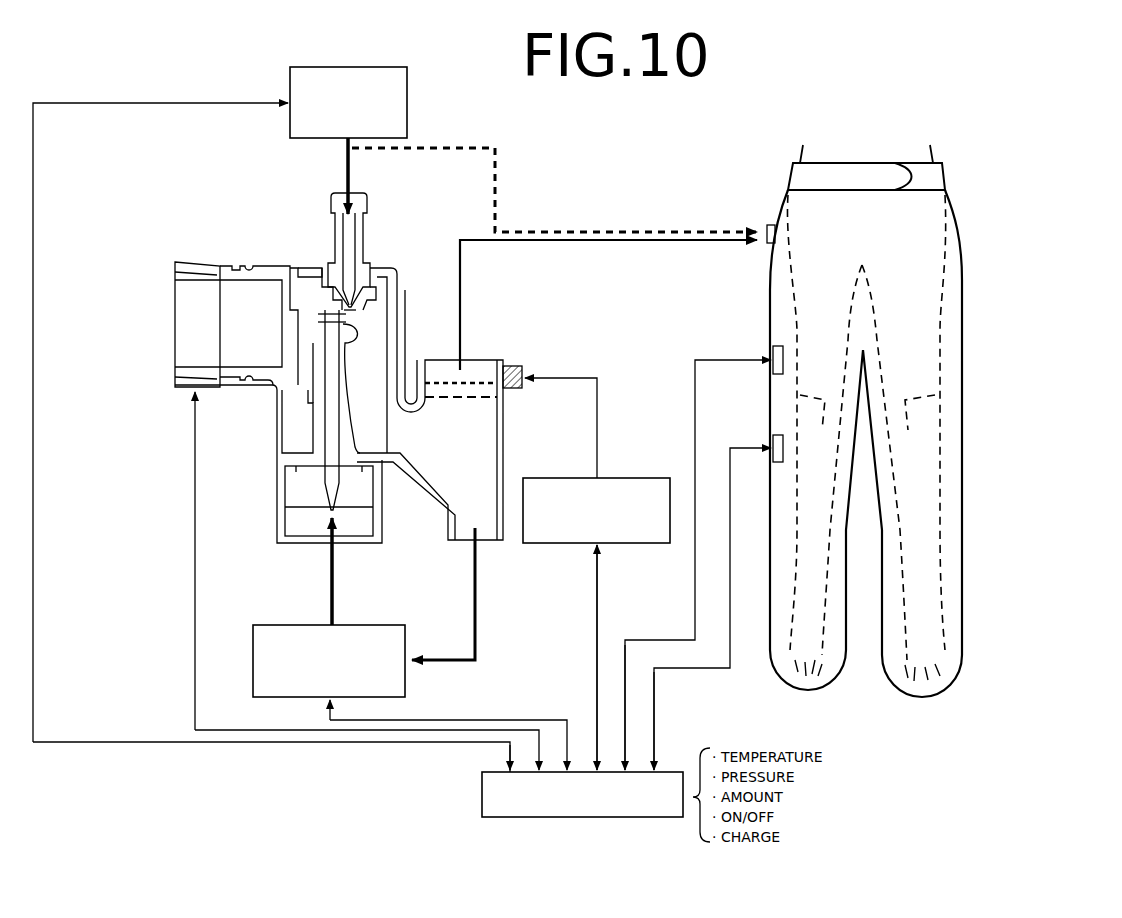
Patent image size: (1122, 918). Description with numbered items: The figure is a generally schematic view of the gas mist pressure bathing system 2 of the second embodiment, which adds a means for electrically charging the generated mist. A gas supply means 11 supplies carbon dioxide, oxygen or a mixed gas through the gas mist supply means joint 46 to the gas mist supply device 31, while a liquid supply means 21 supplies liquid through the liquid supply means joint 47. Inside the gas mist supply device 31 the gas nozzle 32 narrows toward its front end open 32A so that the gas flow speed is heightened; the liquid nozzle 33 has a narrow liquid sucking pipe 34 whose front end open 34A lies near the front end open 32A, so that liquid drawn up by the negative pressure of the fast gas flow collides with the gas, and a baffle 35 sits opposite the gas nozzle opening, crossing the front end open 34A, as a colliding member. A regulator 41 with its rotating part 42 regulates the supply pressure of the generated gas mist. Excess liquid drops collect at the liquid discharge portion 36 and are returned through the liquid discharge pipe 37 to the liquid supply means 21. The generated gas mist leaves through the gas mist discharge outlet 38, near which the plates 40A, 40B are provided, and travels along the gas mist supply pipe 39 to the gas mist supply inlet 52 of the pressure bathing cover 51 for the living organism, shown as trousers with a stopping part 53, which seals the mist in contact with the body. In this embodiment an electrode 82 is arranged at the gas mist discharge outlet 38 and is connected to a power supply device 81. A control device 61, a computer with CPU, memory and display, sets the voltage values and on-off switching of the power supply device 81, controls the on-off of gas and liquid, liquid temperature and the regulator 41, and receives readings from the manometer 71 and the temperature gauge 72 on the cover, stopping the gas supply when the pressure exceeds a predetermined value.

The gas mist pressure bathing system 2 is at (806, 100).
The gas supply means 11 is at (387, 67).
The liquid supply means 21 is at (363, 625).
The gas mist supply device 31 is at (408, 242).
The gas nozzle 32 is at (340, 243).
The front end open of the gas nozzle 32A is at (358, 306).
The liquid nozzle 33 is at (310, 392).
The liquid sucking pipe 34 is at (350, 324).
The front end open of the liquid sucking pipe 34A is at (348, 315).
The baffle 35 is at (351, 345).
The liquid discharge portion 36 is at (490, 545).
The liquid discharge pipe 37 is at (479, 648).
The gas mist discharge outlet 38 is at (487, 358).
The gas mist supply pipe 39 is at (557, 242).
The plate 40A is at (494, 385).
The plate 40B is at (468, 399).
The regulator 41 is at (222, 250).
The rotating part 42 is at (186, 262).
The gas mist supply means joint 46 is at (375, 212).
The liquid supply means joint 47 is at (287, 525).
The pressure bathing cover for the living organism 51 is at (1004, 253).
The gas mist supply inlet 52 is at (768, 223).
The stopping part 53 is at (948, 165).
The control device 61 is at (482, 795).
The manometer 71 is at (770, 348).
The temperature gauge 72 is at (770, 440).
The power supply device 81 is at (632, 478).
The electrode 82 is at (515, 364).